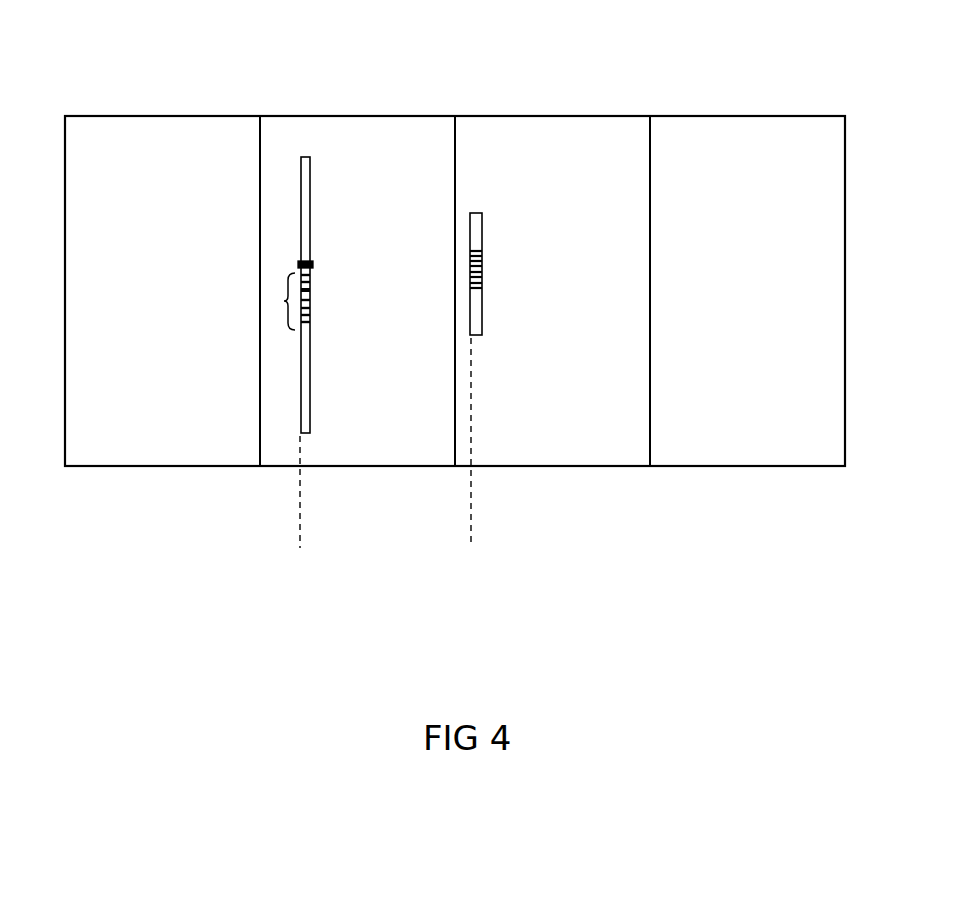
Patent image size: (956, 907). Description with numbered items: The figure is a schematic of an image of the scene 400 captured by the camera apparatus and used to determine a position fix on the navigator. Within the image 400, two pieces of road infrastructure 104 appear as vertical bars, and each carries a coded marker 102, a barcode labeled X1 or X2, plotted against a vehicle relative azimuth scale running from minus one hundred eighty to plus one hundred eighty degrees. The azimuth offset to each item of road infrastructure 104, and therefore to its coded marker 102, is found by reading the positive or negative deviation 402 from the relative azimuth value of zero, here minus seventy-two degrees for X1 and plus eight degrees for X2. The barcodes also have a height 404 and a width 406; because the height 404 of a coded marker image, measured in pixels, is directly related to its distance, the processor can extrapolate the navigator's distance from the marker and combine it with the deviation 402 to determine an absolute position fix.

The image of the scene 400 is at (362, 105).
The road infrastructure 104 is at (320, 201).
The coded marker 102 is at (500, 278).
The width 406 is at (328, 264).
The height 404 is at (268, 300).
The deviation 402 is at (280, 556).